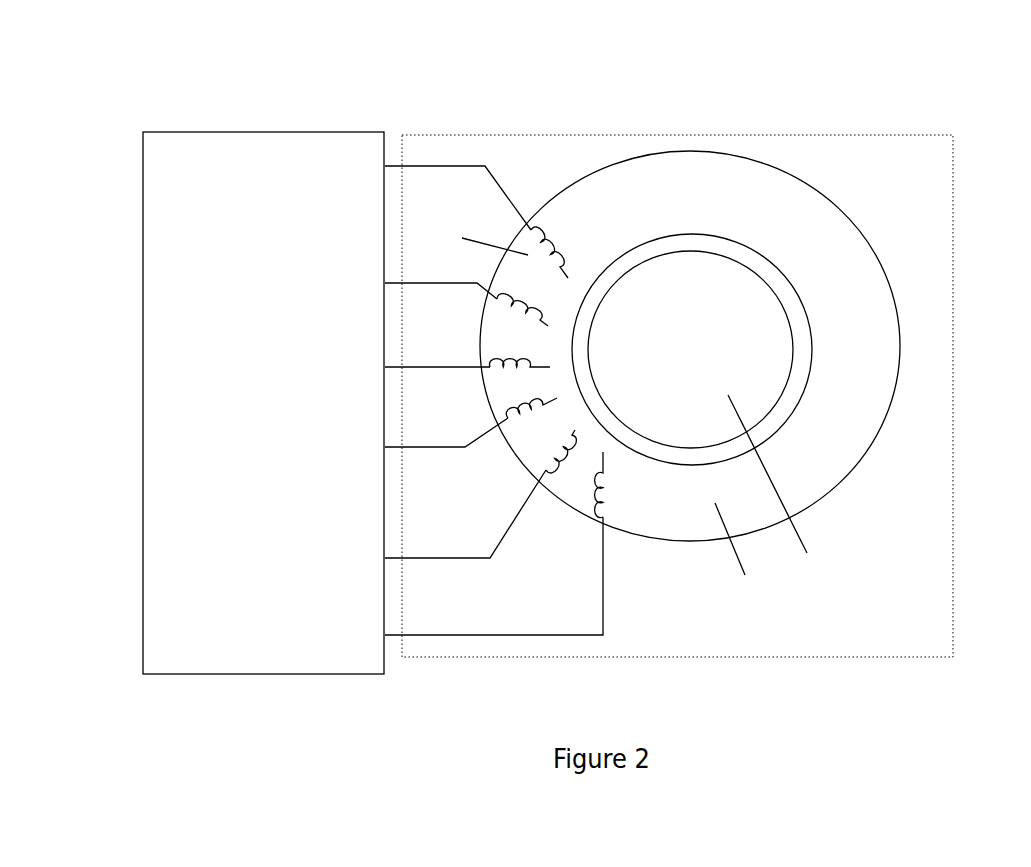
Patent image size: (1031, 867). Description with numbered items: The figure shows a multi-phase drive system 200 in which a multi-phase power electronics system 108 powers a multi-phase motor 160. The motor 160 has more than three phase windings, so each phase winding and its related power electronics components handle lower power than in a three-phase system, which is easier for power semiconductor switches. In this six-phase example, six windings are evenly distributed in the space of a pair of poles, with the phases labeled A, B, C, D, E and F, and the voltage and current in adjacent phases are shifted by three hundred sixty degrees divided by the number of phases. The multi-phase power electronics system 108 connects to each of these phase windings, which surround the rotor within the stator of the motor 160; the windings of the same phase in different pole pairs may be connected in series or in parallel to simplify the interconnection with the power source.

The multi-phase electric machine system 200 is at (956, 99).
The multi-phase power electronics system 108 is at (280, 131).
The multi-phase motor 160 is at (712, 657).